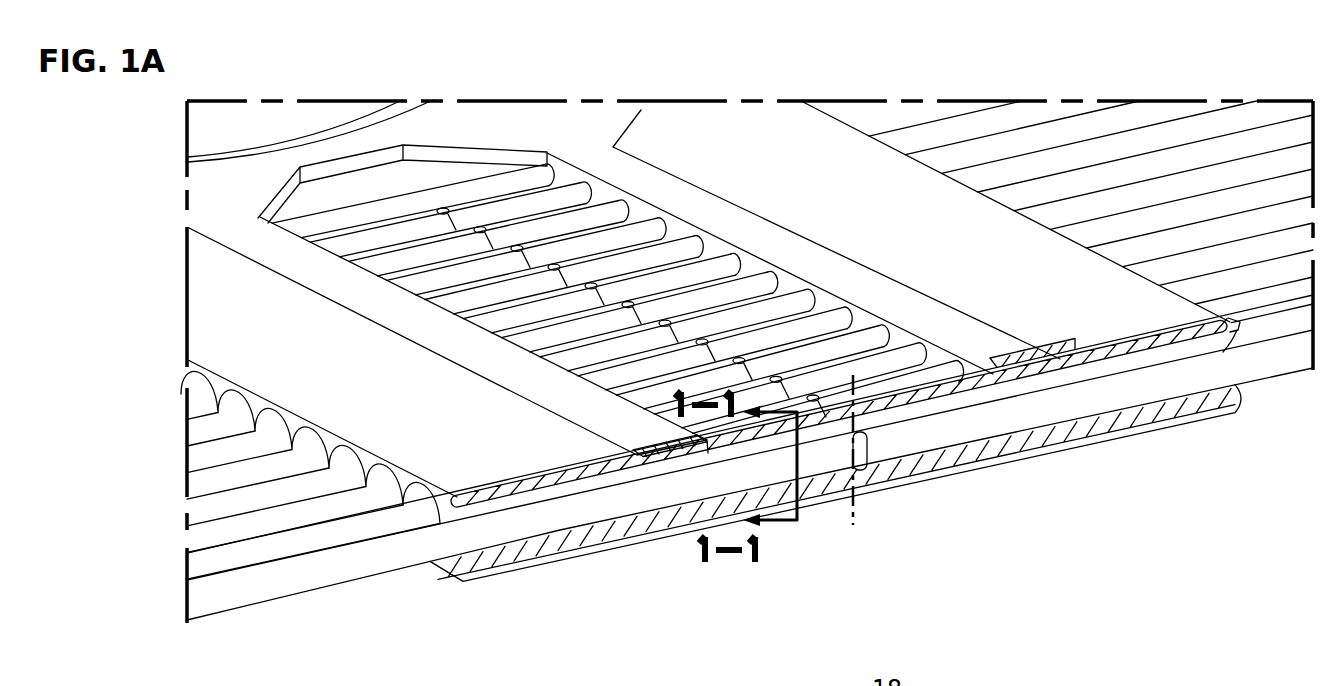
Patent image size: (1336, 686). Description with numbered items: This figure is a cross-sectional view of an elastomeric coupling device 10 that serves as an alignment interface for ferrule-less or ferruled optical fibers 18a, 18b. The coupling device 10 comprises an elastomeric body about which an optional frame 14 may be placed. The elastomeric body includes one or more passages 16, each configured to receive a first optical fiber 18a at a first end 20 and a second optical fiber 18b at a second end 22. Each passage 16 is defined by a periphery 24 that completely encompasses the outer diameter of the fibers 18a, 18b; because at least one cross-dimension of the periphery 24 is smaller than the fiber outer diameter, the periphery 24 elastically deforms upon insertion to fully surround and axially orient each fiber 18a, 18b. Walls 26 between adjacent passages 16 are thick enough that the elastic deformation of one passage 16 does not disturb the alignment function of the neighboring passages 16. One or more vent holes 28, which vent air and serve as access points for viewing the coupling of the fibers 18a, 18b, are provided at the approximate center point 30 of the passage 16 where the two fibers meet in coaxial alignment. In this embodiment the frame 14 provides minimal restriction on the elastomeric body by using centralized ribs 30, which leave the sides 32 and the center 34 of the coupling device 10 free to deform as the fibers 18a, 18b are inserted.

The elastomeric coupling device 10 is at (774, 142).
The frame 14 is at (975, 338).
The passage 16 is at (565, 558).
The first optical fiber 18a is at (250, 598).
The second optical fiber 18b is at (1270, 363).
The first end 20 is at (440, 505).
The second end 22 is at (1228, 324).
The periphery 24 is at (878, 432).
The walls 26 is at (257, 410).
The vent hole 28 is at (741, 366).
The center point / centralized ribs 30 is at (861, 302).
The sides 32 is at (879, 205).
The center 34 is at (627, 283).